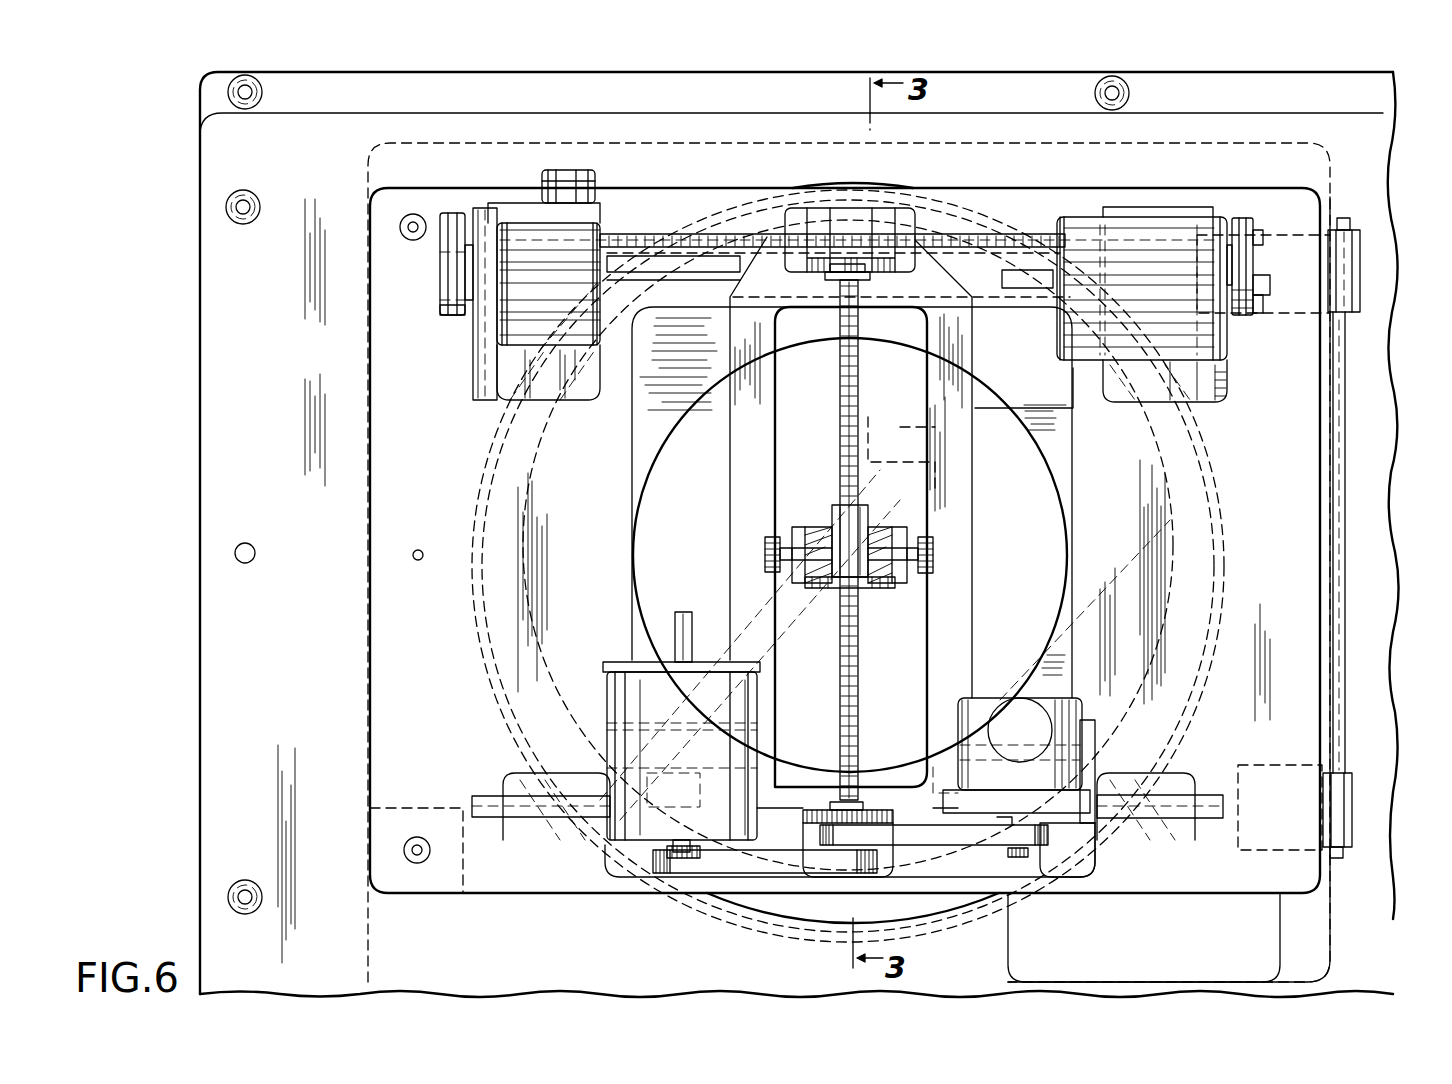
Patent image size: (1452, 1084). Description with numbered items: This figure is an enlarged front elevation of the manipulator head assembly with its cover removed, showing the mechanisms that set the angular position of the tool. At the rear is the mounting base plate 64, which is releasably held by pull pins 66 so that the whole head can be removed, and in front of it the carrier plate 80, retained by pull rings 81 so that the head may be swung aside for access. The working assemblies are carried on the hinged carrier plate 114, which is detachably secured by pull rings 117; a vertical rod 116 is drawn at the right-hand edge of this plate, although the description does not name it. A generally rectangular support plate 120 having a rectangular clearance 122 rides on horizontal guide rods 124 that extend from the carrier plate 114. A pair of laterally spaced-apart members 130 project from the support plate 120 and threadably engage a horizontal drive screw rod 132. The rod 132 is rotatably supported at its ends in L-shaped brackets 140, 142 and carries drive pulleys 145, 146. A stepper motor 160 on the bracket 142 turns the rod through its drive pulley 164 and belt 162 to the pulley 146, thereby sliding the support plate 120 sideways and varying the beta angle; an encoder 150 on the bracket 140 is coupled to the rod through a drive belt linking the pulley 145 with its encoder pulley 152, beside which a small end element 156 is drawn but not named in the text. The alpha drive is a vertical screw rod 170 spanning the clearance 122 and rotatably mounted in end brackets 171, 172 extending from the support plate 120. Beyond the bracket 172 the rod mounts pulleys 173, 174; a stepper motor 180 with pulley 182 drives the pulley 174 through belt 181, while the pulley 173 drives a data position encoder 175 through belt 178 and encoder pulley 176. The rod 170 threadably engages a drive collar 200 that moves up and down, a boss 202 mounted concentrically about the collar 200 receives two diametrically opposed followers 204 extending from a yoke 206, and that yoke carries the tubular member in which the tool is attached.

The mounting base plate 64 is at (215, 103).
The pull pins 66 is at (229, 90).
The carrier plate 80 is at (213, 157).
The pull rings 81 is at (227, 210).
The carrier plate 114 is at (1313, 205).
The guide rod 116 is at (1354, 268).
The pull rings 117 is at (399, 226).
The support plate 120 is at (972, 478).
The rectangular clearance 122 is at (920, 427).
The horizontal guide rods 124 is at (657, 256).
The laterally spaced-apart members 130 is at (820, 218).
The drive screw rod 132 is at (990, 234).
The L-shaped bracket 140 is at (515, 205).
The L-shaped bracket 142 is at (1178, 207).
The drive pulley 145 is at (473, 210).
The drive pulley 146 is at (1245, 225).
The encoder 150 is at (605, 210).
The encoder pulley 152 is at (455, 313).
The knob 156 is at (446, 268).
The stepper motor 160 is at (1190, 318).
The belt 162 is at (1249, 266).
The drive pulley 164 is at (1257, 307).
The screw rod 170 is at (840, 438).
The end bracket 171 is at (888, 270).
The end bracket 172 is at (893, 810).
The pulley 173 is at (890, 855).
The pulley 174 is at (877, 896).
The data position encoder 175 is at (1082, 708).
The encoder pulley 176 is at (1095, 863).
The belt 178 is at (966, 876).
The stepper motor 180 is at (610, 681).
The belt 181 is at (747, 878).
The pulley 182 is at (672, 874).
The drive collar 200 is at (866, 512).
The boss 202 is at (883, 530).
The followers 204 is at (765, 559).
The yoke 206 is at (903, 589).